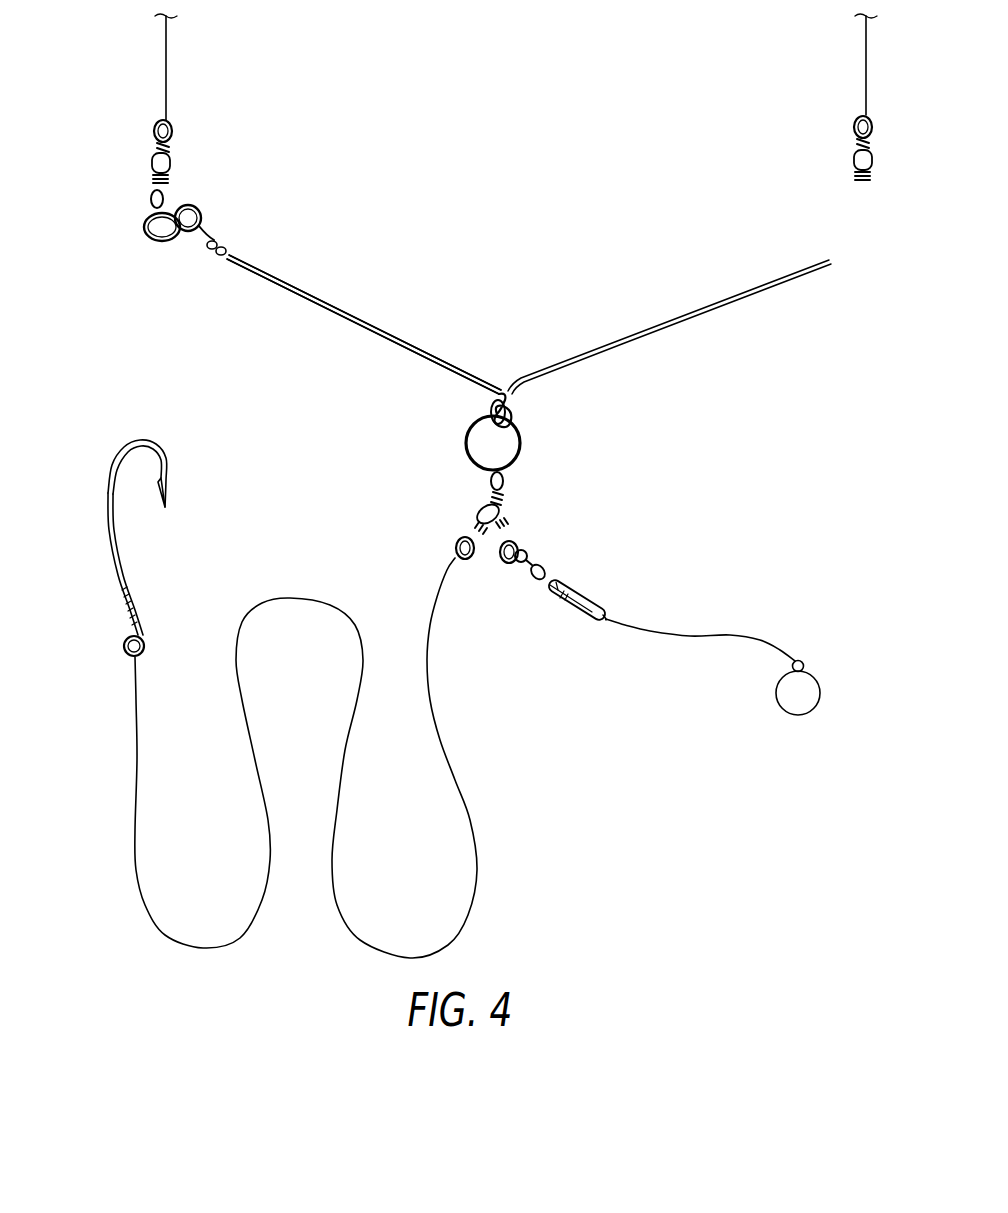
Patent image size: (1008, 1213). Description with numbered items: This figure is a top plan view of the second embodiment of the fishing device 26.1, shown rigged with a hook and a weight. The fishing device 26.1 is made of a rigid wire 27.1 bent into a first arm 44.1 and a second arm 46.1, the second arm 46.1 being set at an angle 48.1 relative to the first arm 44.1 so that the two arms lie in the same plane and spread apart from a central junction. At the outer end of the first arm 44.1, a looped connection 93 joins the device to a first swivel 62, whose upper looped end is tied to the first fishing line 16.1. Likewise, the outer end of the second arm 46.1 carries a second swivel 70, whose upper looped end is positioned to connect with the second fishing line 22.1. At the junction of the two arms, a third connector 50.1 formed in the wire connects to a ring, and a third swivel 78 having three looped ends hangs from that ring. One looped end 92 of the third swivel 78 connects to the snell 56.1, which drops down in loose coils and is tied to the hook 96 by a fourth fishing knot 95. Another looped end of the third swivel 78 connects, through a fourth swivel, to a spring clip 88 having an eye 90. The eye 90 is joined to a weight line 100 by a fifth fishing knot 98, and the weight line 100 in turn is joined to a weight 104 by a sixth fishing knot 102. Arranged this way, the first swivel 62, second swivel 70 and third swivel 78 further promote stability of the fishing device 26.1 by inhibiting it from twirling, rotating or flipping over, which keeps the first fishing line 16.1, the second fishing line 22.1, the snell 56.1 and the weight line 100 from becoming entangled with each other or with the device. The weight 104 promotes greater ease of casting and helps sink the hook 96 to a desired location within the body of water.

The first fishing line 16.1 is at (160, 62).
The second fishing line 22.1 is at (859, 62).
The first swivel 62 is at (146, 162).
The second swivel 70 is at (846, 157).
The loop connection 93 is at (94, 216).
The fishing device 26.1 is at (529, 263).
The rigid wire 27.1 is at (405, 360).
The first arm 44.1 is at (308, 283).
The second arm 46.1 is at (689, 300).
The angle 48.1 is at (542, 362).
The third connector 50.1 is at (533, 418).
The third swivel 78 is at (449, 511).
The looped end 92 is at (454, 535).
The snell 56.1 is at (430, 598).
The hook 96 is at (107, 494).
The fourth fishing knot 95 is at (125, 648).
The spring clip 88 is at (600, 608).
The eye 90 is at (600, 598).
The fifth fishing knot 98 is at (605, 620).
The weight line 100 is at (683, 642).
The sixth fishing knot 102 is at (800, 661).
The weight 104 is at (823, 693).